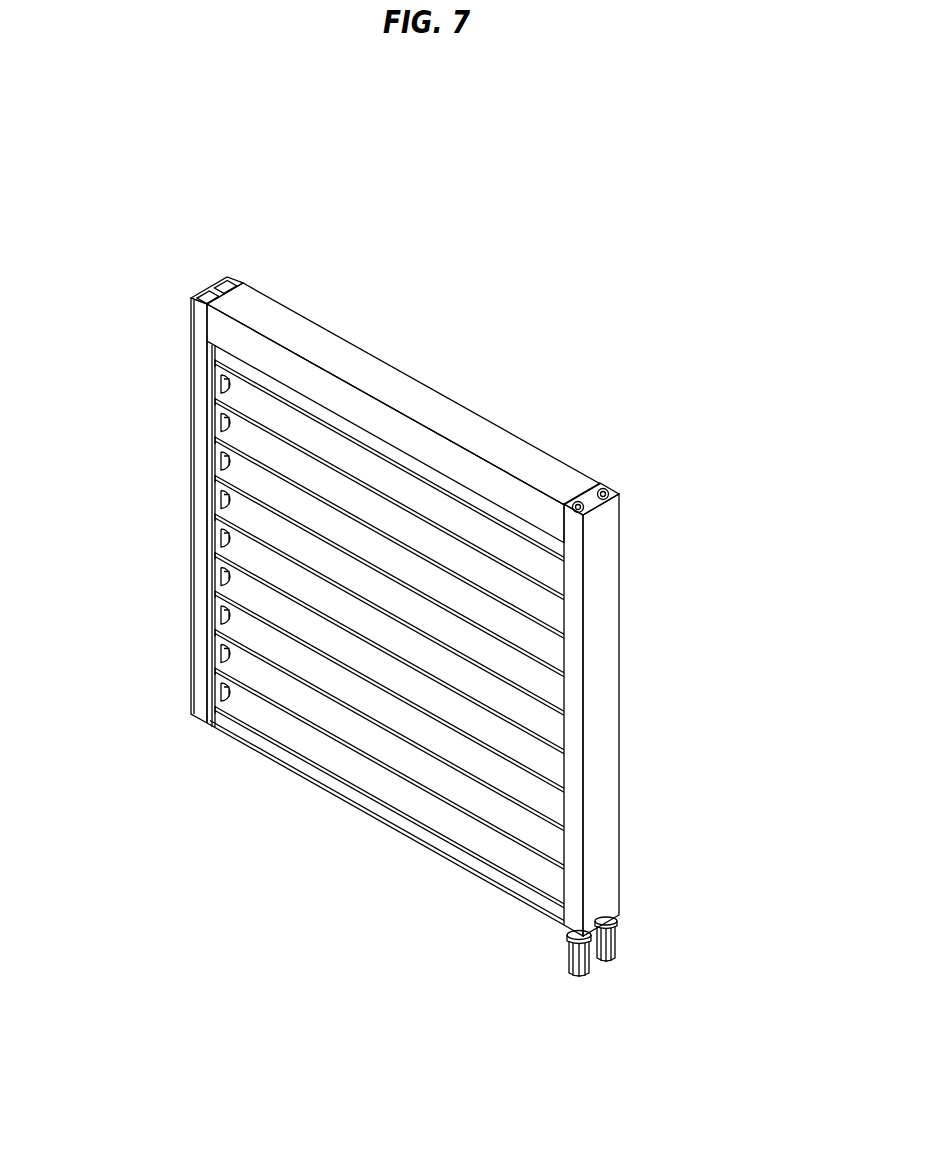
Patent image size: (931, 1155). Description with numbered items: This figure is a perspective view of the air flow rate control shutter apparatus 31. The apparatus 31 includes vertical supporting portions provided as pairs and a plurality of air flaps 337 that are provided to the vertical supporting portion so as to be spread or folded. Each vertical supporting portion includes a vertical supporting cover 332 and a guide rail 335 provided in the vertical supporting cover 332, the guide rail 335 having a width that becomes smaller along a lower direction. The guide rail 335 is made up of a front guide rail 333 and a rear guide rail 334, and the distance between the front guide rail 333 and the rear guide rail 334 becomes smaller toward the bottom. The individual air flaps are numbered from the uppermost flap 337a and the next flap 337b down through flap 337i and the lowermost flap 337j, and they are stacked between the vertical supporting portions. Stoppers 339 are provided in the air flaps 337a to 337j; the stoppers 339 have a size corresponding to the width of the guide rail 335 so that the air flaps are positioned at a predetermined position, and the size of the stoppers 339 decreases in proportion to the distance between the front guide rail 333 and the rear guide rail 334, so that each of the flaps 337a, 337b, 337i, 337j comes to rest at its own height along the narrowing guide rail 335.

The air flow rate control shutter apparatus 31 is at (475, 254).
The vertical supporting cover 332 is at (605, 522).
The front guide rail 333 is at (214, 497).
The rear guide rail 334 is at (214, 545).
The guide rail 335 is at (93, 492).
The air flaps 337 is at (740, 591).
The air flap 337a is at (564, 584).
The air flap 337b is at (564, 623).
The air flap 337i is at (555, 855).
The air flap 337j is at (555, 893).
The stoppers 339 is at (214, 396).